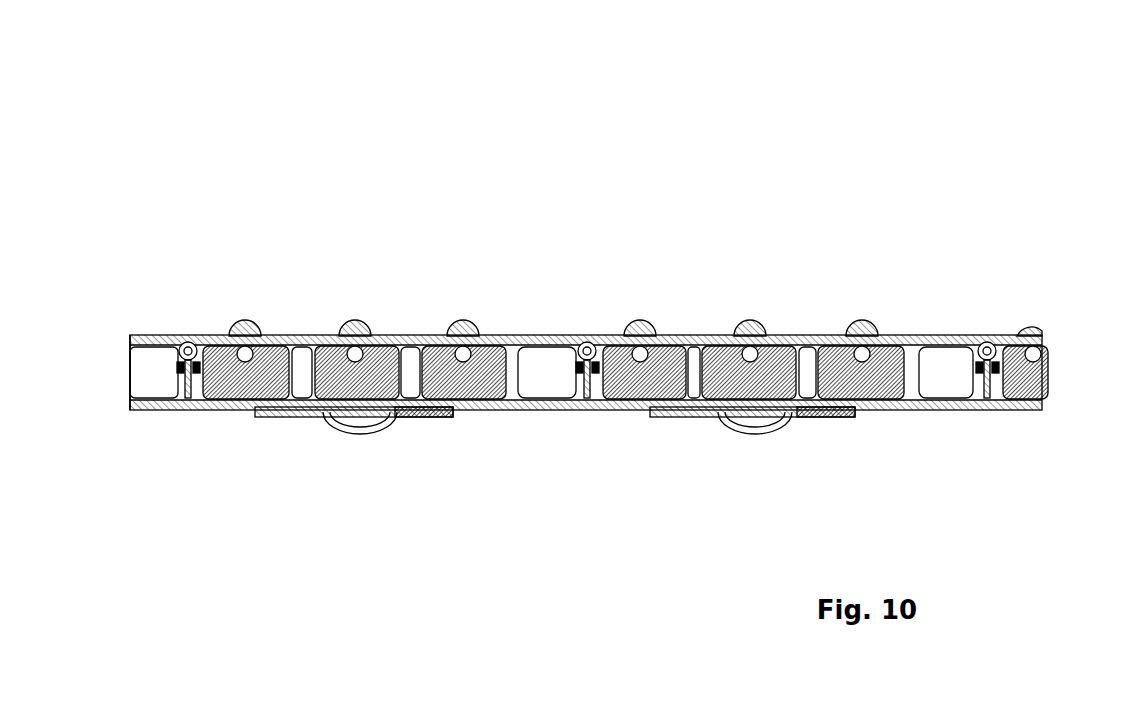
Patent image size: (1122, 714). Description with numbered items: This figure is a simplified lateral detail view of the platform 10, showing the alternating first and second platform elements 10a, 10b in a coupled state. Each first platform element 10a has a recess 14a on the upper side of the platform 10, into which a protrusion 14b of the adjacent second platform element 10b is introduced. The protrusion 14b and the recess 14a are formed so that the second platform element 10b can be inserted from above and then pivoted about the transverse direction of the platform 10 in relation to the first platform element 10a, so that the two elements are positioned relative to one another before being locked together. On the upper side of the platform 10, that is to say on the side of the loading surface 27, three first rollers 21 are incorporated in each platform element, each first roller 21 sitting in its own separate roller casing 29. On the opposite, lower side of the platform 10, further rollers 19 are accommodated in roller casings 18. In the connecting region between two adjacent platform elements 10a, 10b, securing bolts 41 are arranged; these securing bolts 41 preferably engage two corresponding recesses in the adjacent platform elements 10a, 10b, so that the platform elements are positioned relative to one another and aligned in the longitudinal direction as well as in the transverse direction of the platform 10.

The platform 10 is at (178, 108).
The first platform element 10a is at (516, 410).
The second platform element 10b is at (938, 408).
The recess 14a is at (212, 375).
The protrusion 14b is at (188, 342).
The roller casing 18 is at (406, 420).
The roller 19 is at (358, 432).
The first roller 21 is at (246, 331).
The loading surface 27 is at (105, 268).
The roller casing 29 is at (222, 352).
The securing bolt 41 is at (180, 368).